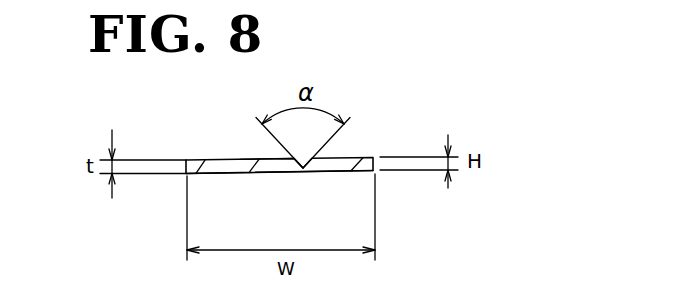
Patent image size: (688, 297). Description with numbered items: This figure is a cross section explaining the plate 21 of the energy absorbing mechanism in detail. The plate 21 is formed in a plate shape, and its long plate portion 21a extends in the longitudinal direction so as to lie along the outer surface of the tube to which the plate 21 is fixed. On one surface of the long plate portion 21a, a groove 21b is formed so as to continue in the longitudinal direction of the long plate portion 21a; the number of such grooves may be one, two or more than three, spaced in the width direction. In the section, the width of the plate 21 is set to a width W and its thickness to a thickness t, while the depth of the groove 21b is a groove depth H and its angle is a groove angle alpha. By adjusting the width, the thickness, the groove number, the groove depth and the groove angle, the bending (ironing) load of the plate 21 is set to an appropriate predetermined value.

The plate 21 is at (279, 190).
The long plate portion 21a is at (229, 176).
The groove 21b is at (250, 160).